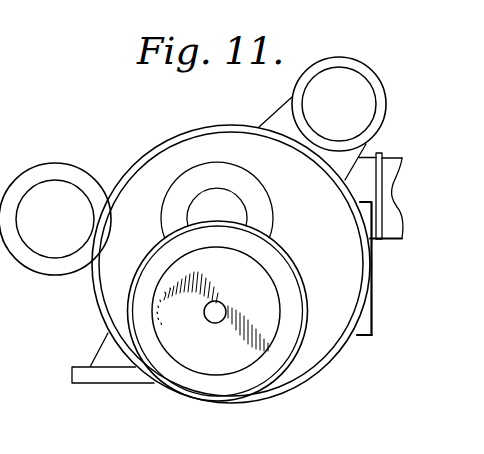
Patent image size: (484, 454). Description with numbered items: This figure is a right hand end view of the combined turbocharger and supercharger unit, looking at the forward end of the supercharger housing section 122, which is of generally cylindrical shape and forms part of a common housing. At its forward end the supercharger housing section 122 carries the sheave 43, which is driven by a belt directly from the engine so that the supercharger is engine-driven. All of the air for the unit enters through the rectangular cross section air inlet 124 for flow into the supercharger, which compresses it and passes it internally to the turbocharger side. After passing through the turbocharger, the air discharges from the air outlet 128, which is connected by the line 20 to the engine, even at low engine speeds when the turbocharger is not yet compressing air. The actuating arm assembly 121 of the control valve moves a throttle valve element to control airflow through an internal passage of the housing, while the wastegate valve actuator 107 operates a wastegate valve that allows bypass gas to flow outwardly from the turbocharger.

The line 20 is at (368, 260).
The supercharger housing section 122 is at (343, 242).
The sheave 43 is at (240, 383).
The wastegate valve actuator 107 is at (77, 164).
The actuating arm assembly 121 is at (331, 109).
The air outlet 128 is at (387, 173).
The air inlet 124 is at (377, 333).